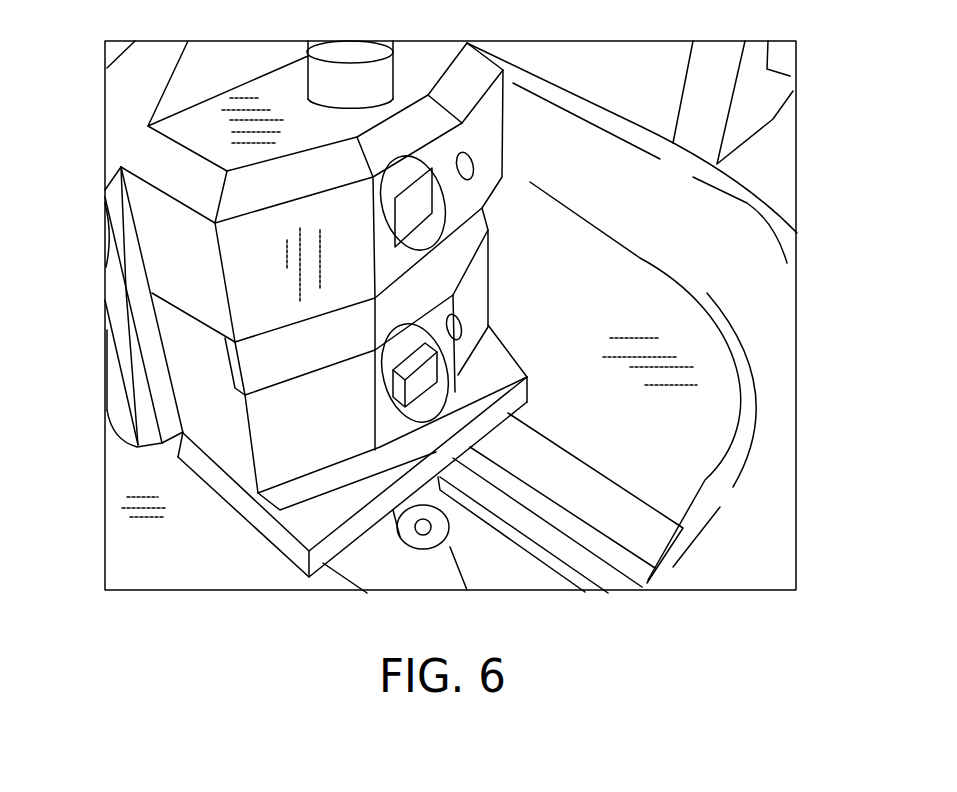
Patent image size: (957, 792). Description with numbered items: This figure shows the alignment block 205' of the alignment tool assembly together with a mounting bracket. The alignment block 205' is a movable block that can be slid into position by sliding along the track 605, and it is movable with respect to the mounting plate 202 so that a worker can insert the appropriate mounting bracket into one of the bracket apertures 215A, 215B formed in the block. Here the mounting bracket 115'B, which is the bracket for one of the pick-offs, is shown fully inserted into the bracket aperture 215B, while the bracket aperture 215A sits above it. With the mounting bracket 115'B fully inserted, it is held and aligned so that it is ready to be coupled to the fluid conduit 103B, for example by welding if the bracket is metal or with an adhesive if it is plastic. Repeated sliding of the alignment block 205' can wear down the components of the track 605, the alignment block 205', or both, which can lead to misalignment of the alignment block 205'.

The mounting plate 202 is at (198, 557).
The alignment block 205' is at (285, 275).
The bracket aperture 215A is at (428, 210).
The bracket aperture 215B is at (393, 394).
The mounting bracket 115'B is at (496, 375).
The fluid conduit 103B is at (743, 203).
The track 605 is at (623, 507).